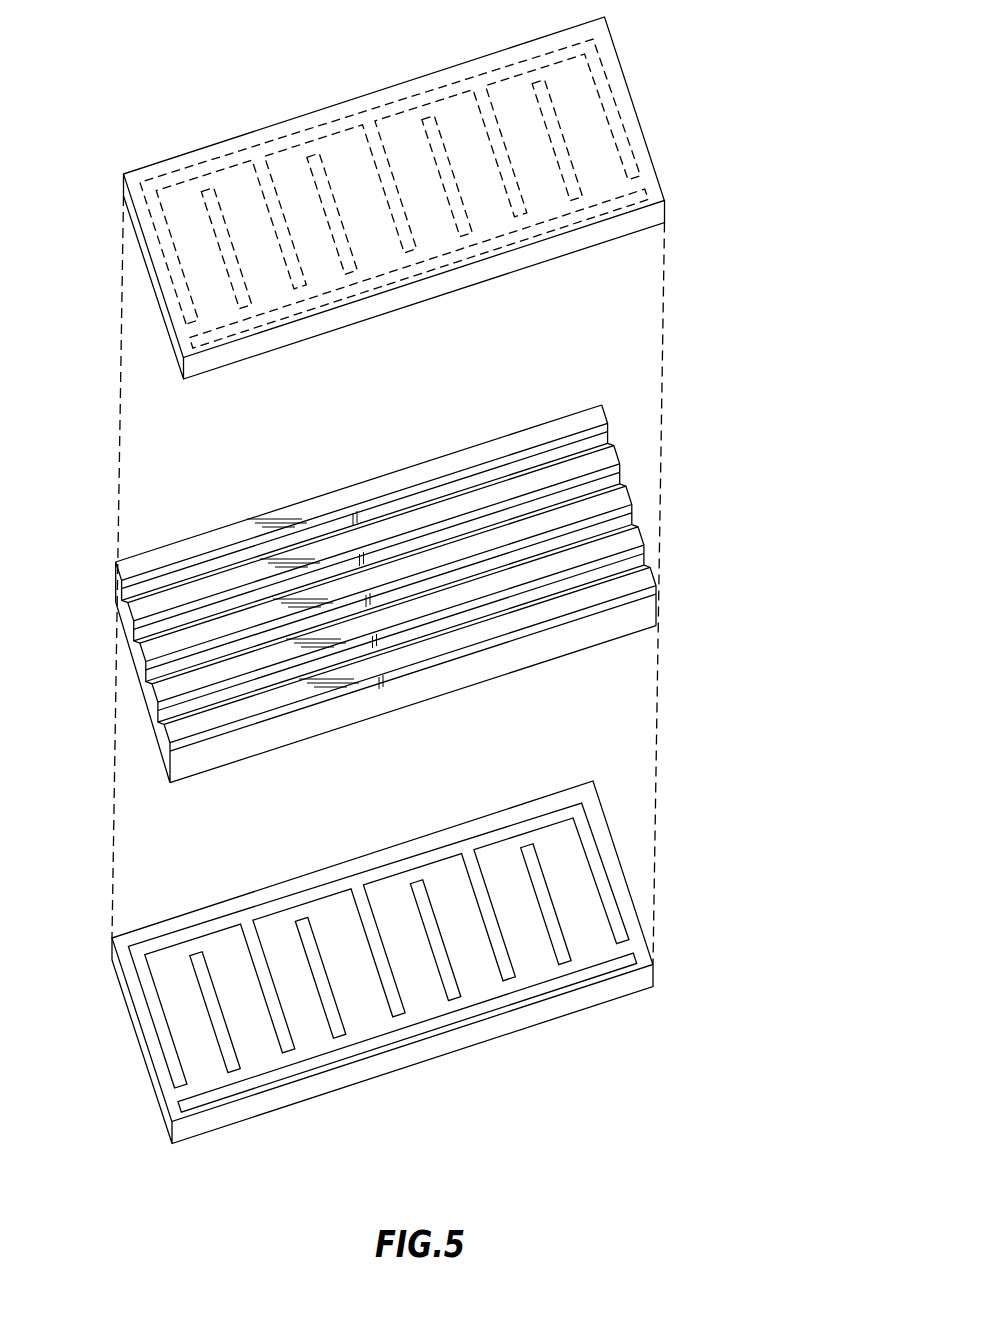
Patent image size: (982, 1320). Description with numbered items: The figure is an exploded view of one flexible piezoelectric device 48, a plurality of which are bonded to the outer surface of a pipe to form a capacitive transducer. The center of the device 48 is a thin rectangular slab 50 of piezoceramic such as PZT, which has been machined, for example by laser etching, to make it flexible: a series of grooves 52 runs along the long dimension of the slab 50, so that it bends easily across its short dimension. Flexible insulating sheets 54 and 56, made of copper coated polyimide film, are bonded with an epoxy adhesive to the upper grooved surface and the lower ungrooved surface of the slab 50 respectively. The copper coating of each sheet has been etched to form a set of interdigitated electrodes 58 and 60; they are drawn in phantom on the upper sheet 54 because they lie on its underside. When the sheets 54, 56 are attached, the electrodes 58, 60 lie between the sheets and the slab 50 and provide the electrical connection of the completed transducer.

The piezoelectric device 48 is at (752, 498).
The slab 50 is at (462, 678).
The grooves 52 is at (156, 672).
The flexible insulating sheet 54 is at (333, 321).
The flexible insulating sheet 56 is at (347, 1073).
The interdigitated electrode 58 is at (612, 107).
The interdigitated electrode 60 is at (583, 213).